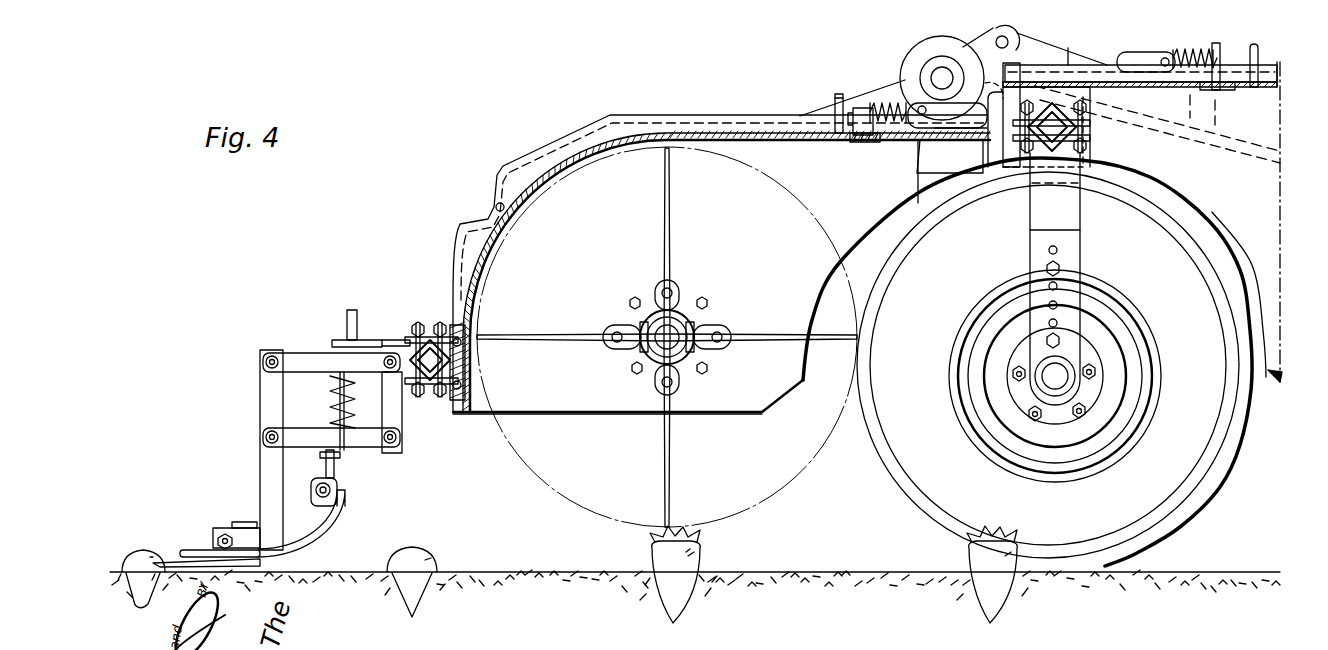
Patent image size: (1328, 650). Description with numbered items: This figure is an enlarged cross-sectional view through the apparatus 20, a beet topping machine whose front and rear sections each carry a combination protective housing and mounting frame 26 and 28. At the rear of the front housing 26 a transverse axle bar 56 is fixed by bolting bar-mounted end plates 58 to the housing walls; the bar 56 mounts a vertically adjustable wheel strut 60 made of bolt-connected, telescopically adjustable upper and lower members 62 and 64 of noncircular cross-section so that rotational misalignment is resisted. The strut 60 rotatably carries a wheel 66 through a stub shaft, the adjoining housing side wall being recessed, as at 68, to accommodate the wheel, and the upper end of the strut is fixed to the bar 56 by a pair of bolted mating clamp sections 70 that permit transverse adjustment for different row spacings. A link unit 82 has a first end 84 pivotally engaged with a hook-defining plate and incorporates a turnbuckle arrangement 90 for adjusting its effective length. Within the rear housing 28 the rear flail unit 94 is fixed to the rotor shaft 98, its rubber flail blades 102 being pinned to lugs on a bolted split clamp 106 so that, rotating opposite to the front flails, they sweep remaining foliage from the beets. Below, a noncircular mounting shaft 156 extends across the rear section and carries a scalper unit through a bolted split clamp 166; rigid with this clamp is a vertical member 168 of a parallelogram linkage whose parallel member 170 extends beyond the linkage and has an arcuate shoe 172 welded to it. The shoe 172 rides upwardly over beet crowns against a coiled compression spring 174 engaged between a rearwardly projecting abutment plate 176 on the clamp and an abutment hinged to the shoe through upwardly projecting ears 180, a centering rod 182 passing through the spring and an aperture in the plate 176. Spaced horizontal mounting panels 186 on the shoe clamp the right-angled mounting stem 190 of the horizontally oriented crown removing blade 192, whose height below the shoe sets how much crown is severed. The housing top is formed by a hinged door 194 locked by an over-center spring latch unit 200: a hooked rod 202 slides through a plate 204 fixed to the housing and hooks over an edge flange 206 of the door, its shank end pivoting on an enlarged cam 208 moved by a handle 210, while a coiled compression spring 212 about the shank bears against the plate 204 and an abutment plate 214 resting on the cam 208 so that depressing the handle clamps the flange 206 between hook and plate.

The apparatus 20 is at (532, 121).
The front section housing 26 is at (1272, 222).
The rear section housing 28 is at (783, 150).
The transverse axle bar 56 is at (1092, 135).
The end plates 58 is at (1090, 159).
The wheel strut 60 is at (1083, 245).
The upper strut member 62 is at (1037, 214).
The lower strut member 64 is at (1035, 281).
The wheel 66 is at (900, 491).
The housing recess 68 is at (1165, 202).
The clamp sections 70 is at (1085, 110).
The link unit 82 is at (1098, 57).
The first end of link unit 84 is at (1030, 46).
The turnbuckle arrangement 90 is at (1250, 120).
The rear flail unit 94 is at (656, 423).
The rear rotor shaft 98 is at (700, 326).
The flail blade 102 is at (670, 484).
The split clamp 106 is at (680, 308).
The mounting shaft 156 is at (467, 373).
The split clamp 166 is at (472, 361).
The vertical linkage member 168 is at (400, 416).
The linkage member 170 is at (262, 393).
The arcuate shoe 172 is at (300, 538).
The coiled compression spring 174 is at (330, 400).
The abutment plate 176 is at (372, 339).
The ears 180 is at (330, 510).
The centering rod 182 is at (336, 469).
The mounting panels 186 is at (237, 532).
The mounting stem 190 is at (243, 522).
The crown removing blade 192 is at (205, 561).
The door 194 is at (745, 133).
The over-center spring latch unit 200 is at (1213, 48).
The hooked rod 202 is at (860, 110).
The mounting plate 204 is at (891, 138).
The edge flange 206 is at (853, 139).
The cam 208 is at (965, 142).
The handle 210 is at (943, 112).
The coiled compression spring 212 is at (878, 108).
The abutment plate 214 is at (1034, 353).